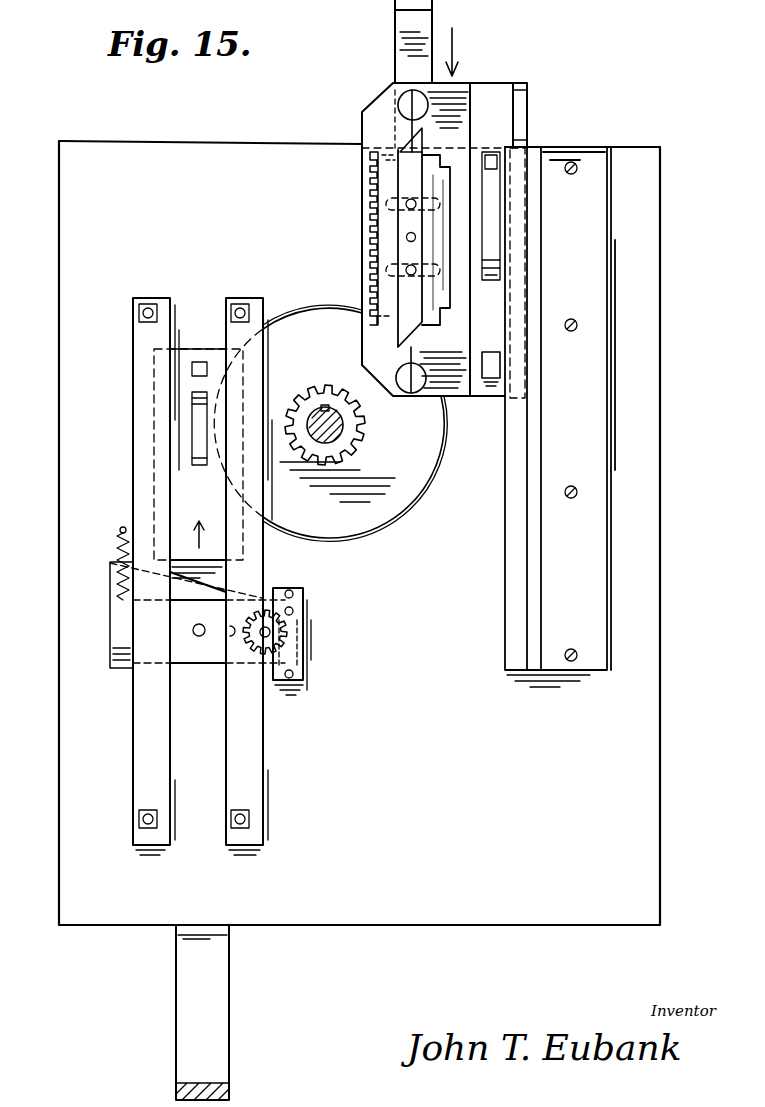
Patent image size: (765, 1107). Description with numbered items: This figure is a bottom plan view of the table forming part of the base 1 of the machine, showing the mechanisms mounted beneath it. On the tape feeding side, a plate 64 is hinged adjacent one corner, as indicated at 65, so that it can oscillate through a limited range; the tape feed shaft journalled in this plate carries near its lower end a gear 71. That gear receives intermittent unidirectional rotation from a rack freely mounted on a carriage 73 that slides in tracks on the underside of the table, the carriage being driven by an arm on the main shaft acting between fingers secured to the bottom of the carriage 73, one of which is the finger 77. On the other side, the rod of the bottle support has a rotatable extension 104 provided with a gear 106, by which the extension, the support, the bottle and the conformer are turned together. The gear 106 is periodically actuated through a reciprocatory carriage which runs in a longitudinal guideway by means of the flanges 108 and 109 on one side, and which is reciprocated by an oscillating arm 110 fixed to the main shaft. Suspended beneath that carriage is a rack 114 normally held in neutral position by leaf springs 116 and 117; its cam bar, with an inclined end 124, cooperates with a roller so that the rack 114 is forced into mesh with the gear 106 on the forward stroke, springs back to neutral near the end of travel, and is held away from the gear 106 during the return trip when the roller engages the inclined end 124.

The base 1 is at (58, 269).
The plate 64 is at (192, 661).
The hinge 65 is at (292, 613).
The gear 71 is at (290, 629).
The carriage 73 is at (180, 498).
The finger 77 is at (496, 340).
The rotatable extension 104 is at (344, 425).
The gear 106 is at (318, 392).
The flange 108 is at (520, 111).
The flange 109 is at (520, 135).
The oscillating arm 110 is at (455, 97).
The rack 114 is at (372, 200).
The leaf spring 116 is at (399, 101).
The leaf spring 117 is at (418, 393).
The inclined end 124 is at (395, 150).